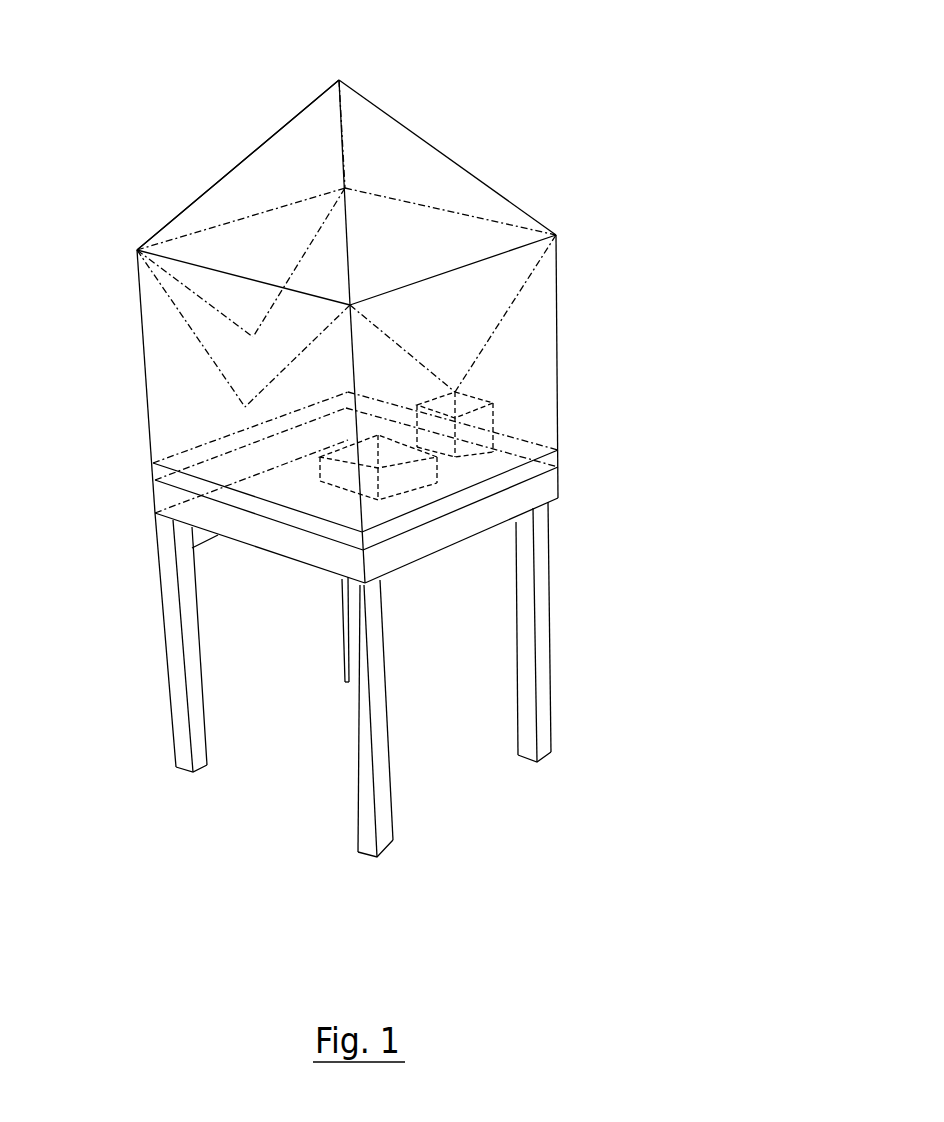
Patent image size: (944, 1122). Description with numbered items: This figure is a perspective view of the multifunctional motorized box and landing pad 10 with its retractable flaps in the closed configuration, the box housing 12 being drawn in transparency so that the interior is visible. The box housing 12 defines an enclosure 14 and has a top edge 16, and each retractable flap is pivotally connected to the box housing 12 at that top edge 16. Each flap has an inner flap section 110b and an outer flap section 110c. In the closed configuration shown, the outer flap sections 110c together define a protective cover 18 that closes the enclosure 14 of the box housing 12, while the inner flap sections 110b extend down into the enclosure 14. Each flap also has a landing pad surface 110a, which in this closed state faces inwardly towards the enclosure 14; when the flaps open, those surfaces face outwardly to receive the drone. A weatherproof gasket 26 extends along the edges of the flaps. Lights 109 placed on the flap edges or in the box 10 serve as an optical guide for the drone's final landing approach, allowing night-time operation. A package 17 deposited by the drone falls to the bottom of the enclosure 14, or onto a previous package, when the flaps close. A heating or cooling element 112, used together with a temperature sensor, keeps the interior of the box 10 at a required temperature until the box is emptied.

The multifunctional motorized box and landing pad 10 is at (536, 144).
The box housing 12 is at (559, 342).
The enclosure 14 is at (215, 450).
The top edge 16 is at (498, 257).
The package 17 is at (473, 433).
The protective cover 18 is at (230, 126).
The weatherproof gasket 26 is at (401, 115).
The lights 109 is at (330, 73).
The landing pad surface 110a is at (450, 158).
The inner flap section 110b is at (213, 333).
The outer flap section 110c is at (212, 205).
The heating or cooling element 112 is at (232, 498).